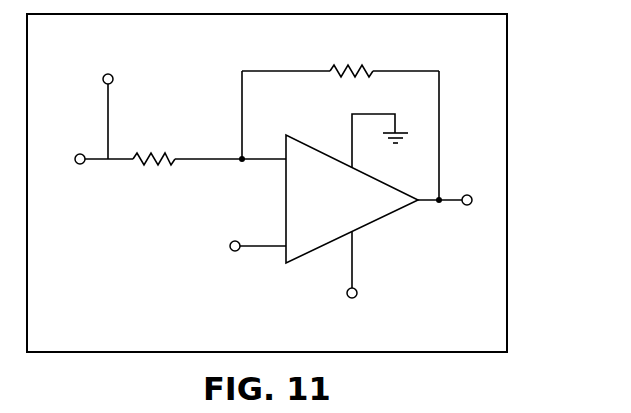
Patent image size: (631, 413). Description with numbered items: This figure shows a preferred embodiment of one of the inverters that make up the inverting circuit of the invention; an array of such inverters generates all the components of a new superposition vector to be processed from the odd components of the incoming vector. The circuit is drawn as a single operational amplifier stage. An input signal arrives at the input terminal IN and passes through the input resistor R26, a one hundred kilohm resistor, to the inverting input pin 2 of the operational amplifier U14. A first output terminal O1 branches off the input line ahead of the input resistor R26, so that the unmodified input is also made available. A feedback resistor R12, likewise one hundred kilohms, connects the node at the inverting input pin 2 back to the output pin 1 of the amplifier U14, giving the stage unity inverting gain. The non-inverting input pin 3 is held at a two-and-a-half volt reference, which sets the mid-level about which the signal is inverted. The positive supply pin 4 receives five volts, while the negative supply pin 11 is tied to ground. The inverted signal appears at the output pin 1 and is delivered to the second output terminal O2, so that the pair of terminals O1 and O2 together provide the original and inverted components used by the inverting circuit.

The input terminal IN is at (88, 172).
The first output terminal O1 is at (107, 106).
The second output terminal O2 is at (465, 191).
The input resistor 100k R26 is at (187, 156).
The feedback resistor 100k R12 is at (340, 117).
The operational amplifier TS914 U14 is at (326, 201).
The op-amp output pin 1 is at (440, 211).
The op-amp inverting input pin 2 is at (264, 172).
The op-amp non-inverting input pin (2.5V) 3 is at (231, 260).
The op-amp V+ supply pin (5V) 4 is at (362, 278).
The op-amp V- supply pin (ground) 11 is at (368, 141).